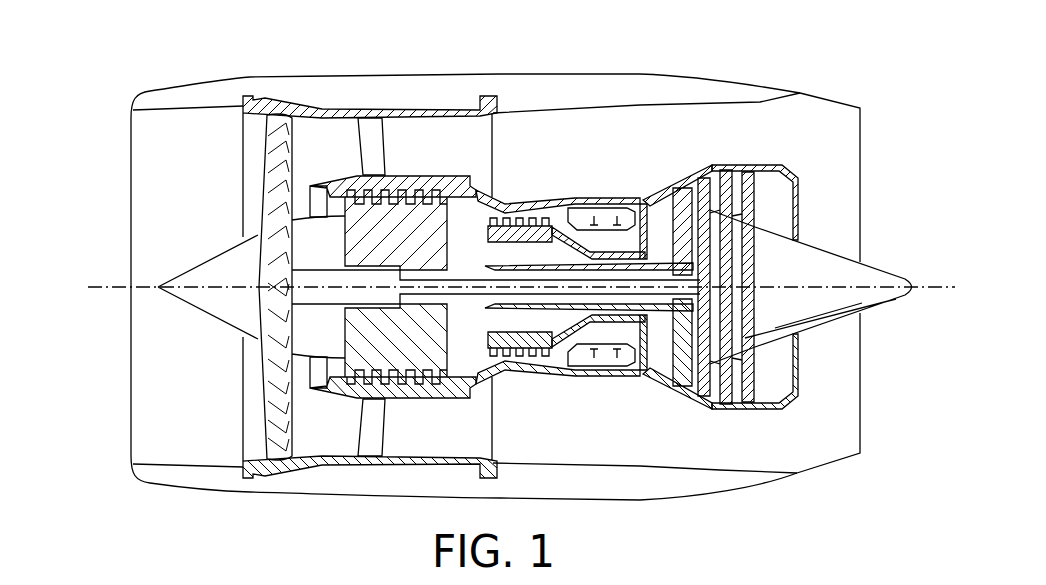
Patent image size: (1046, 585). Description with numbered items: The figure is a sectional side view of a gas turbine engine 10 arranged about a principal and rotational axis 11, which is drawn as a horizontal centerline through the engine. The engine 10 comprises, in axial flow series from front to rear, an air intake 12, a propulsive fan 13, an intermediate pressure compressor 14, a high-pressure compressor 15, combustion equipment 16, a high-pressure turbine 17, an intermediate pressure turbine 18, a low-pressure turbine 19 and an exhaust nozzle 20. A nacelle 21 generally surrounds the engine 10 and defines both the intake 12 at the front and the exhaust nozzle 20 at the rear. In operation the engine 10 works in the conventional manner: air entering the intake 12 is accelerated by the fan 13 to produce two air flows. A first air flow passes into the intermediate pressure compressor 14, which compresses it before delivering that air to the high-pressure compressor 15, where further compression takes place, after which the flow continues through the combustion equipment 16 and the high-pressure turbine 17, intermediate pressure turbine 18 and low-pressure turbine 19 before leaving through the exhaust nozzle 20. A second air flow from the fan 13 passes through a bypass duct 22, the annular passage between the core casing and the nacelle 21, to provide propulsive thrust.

The gas turbine engine 10 is at (114, 158).
The principal and rotational axis 11 is at (107, 287).
The air intake 12 is at (200, 110).
The propulsive fan 13 is at (263, 430).
The intermediate pressure compressor 14 is at (405, 368).
The high-pressure compressor 15 is at (513, 218).
The combustion equipment 16 is at (598, 358).
The high-pressure turbine 17 is at (638, 372).
The intermediate pressure turbine 18 is at (662, 190).
The low-pressure turbine 19 is at (697, 393).
The exhaust nozzle 20 is at (862, 453).
The nacelle 21 is at (643, 73).
The bypass duct 22 is at (454, 159).